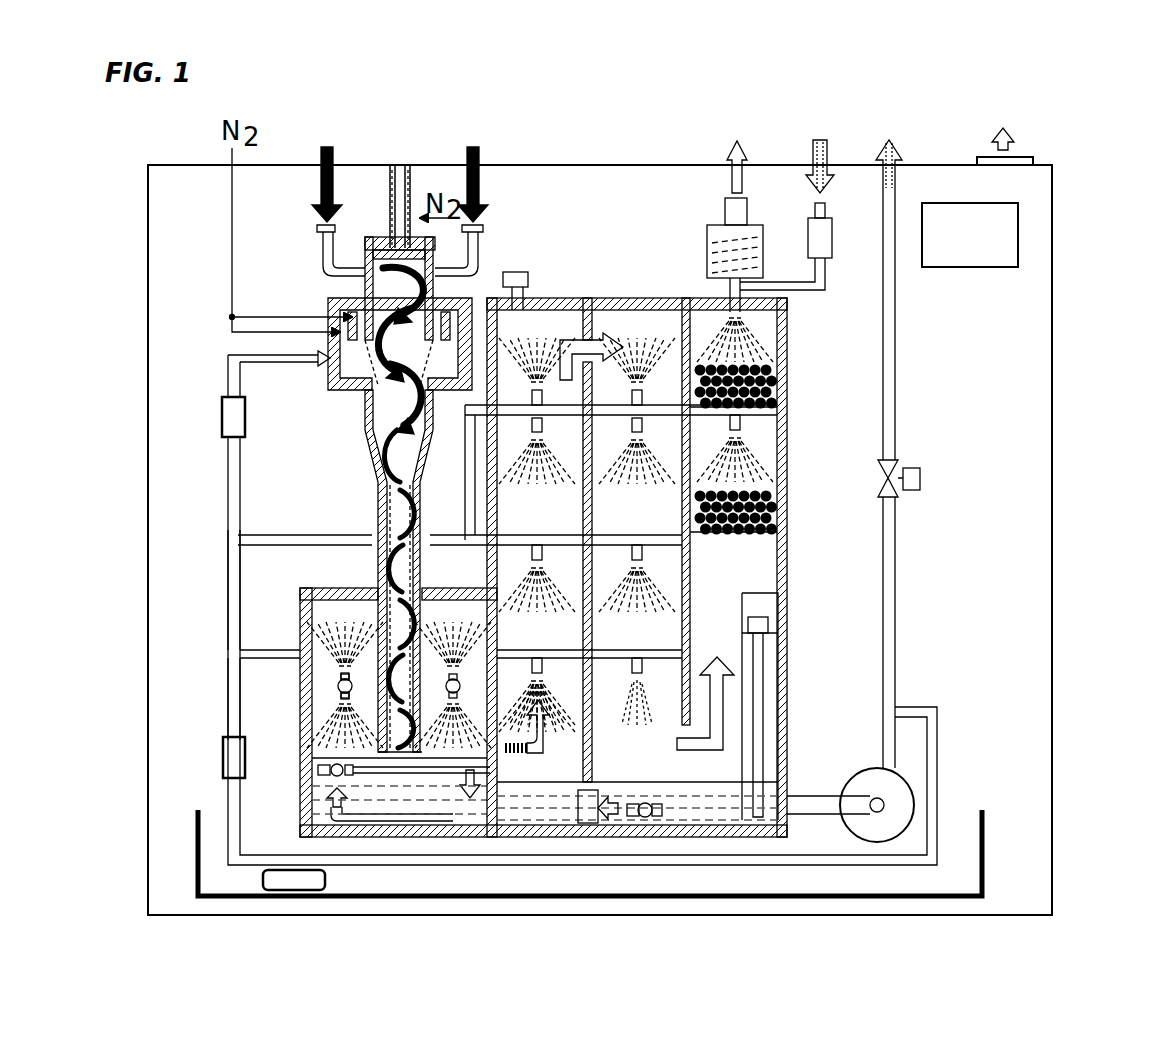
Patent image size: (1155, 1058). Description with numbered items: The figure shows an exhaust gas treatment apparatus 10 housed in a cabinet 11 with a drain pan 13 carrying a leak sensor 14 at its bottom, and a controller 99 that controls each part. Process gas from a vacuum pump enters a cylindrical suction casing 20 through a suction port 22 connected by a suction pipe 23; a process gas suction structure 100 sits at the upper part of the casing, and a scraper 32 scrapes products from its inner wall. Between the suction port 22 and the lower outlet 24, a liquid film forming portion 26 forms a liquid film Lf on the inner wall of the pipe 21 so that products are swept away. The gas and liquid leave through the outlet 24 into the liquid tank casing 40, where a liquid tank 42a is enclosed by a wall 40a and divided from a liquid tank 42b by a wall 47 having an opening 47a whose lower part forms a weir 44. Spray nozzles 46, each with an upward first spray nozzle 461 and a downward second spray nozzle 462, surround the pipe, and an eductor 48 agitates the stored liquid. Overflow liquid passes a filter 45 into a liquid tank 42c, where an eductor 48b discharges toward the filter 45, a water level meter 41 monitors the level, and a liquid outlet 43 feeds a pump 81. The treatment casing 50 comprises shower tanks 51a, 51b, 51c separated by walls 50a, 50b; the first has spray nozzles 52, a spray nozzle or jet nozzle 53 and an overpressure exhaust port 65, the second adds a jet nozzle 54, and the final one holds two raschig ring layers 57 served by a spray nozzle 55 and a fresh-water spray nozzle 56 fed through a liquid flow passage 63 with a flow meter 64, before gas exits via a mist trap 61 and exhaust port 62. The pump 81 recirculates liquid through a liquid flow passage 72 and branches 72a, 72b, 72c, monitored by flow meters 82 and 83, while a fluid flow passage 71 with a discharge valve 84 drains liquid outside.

The exhaust gas treatment apparatus 10 is at (590, 146).
The cabinet 11 is at (1052, 340).
The drain pan 13 is at (983, 838).
The leak sensor 14 is at (288, 890).
The suction casing 20 is at (420, 160).
The pipe 21 is at (377, 478).
The suction port 22 is at (403, 258).
The suction pipe 23 is at (322, 262).
The outlet 24 is at (405, 757).
The liquid film forming portion 26 is at (318, 338).
The scraper 32 is at (392, 176).
The liquid tank casing 40 is at (280, 614).
The wall 40a is at (332, 590).
The water level meter 41 is at (780, 688).
The liquid tank 42a is at (475, 818).
The liquid tank 42b is at (542, 807).
The liquid tank 42c is at (687, 807).
The liquid outlet 43 is at (799, 830).
The weir 44 is at (500, 770).
The filter 45 is at (593, 820).
The spray nozzle 46 is at (338, 687).
The first spray nozzle 461 is at (340, 676).
The second spray nozzle 462 is at (343, 696).
The wall 47 is at (532, 680).
The opening 47a is at (483, 640).
The eductor 48 is at (337, 786).
The eductor 48b is at (655, 803).
The treatment casing 50 is at (650, 185).
The wall 50a is at (592, 750).
The wall 50b is at (690, 563).
The shower tank 51a is at (540, 318).
The shower tank 51b is at (608, 317).
The shower tank 51c is at (708, 322).
The spray nozzle 52 is at (545, 550).
The spray nozzle or jet nozzle 53 is at (532, 393).
The jet nozzle 54 is at (645, 668).
The spray nozzle 55 is at (742, 423).
The spray nozzle 56 is at (748, 305).
The raschig ring layer 57 is at (765, 378).
The mist trap 61 is at (763, 245).
The exhaust port 62 is at (747, 205).
The liquid flow passage 63 is at (832, 268).
The flow meter 64 is at (827, 210).
The overpressure exhaust port 65 is at (515, 272).
The fluid flow passage 71 is at (895, 572).
The liquid flow passage 72 is at (937, 720).
The liquid flow passage 72a is at (295, 652).
The liquid flow passage 72b is at (270, 535).
The liquid flow passage 72c is at (226, 370).
The pump 81 is at (905, 788).
The flow meter 82 is at (222, 758).
The flow meter 83 is at (222, 420).
The discharge valve 84 is at (920, 480).
The controller 99 is at (1018, 215).
The process gas suction structure 100 is at (326, 303).
The liquid film Lf is at (377, 440).